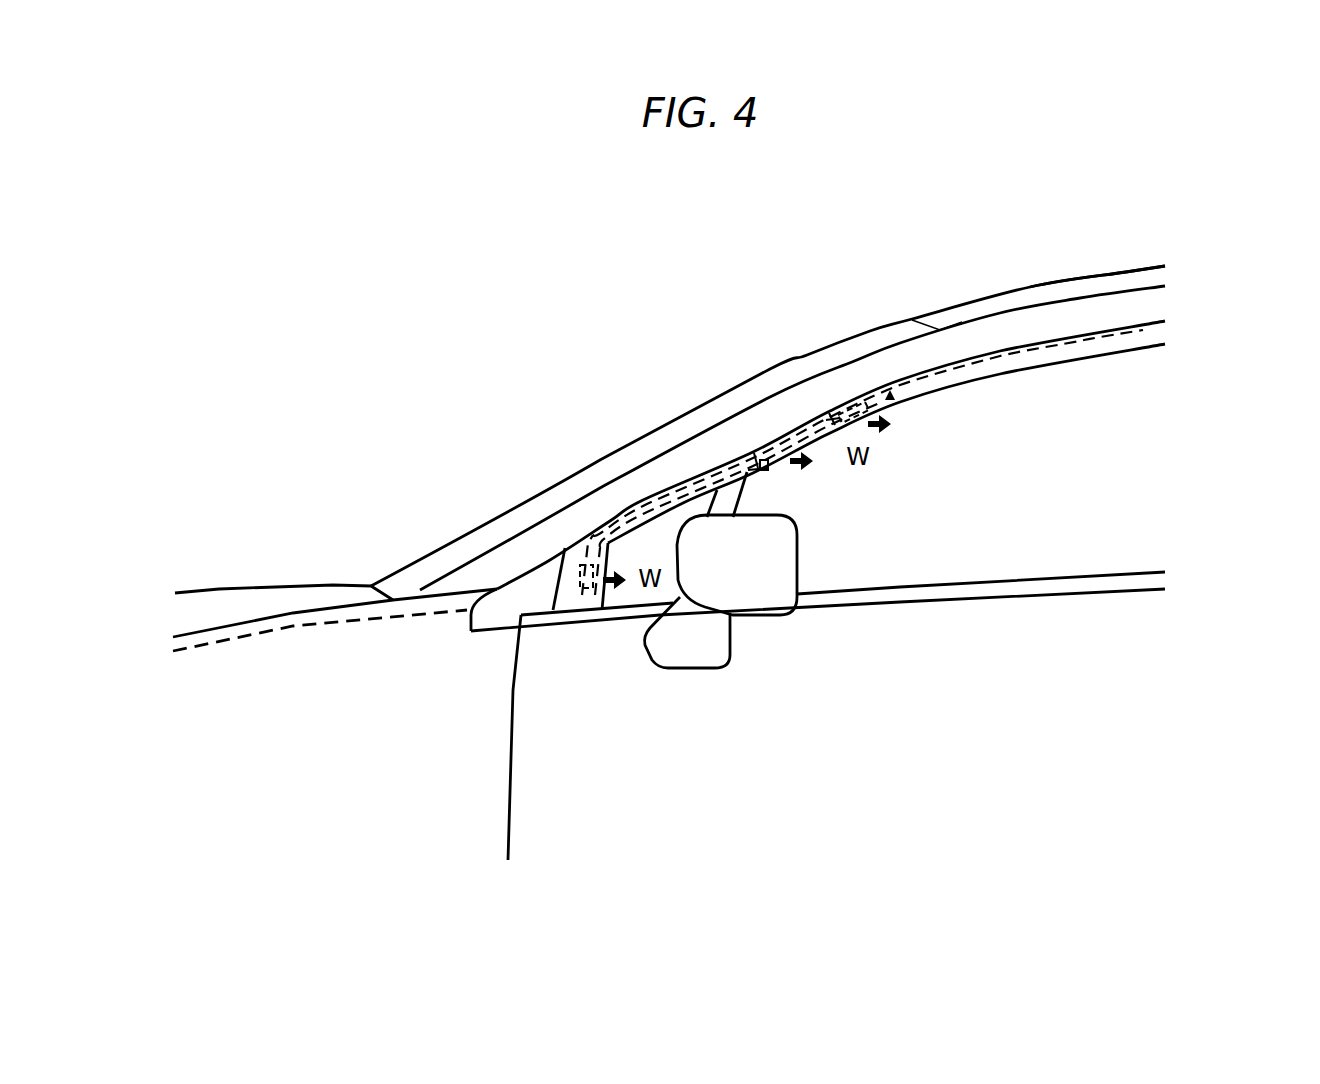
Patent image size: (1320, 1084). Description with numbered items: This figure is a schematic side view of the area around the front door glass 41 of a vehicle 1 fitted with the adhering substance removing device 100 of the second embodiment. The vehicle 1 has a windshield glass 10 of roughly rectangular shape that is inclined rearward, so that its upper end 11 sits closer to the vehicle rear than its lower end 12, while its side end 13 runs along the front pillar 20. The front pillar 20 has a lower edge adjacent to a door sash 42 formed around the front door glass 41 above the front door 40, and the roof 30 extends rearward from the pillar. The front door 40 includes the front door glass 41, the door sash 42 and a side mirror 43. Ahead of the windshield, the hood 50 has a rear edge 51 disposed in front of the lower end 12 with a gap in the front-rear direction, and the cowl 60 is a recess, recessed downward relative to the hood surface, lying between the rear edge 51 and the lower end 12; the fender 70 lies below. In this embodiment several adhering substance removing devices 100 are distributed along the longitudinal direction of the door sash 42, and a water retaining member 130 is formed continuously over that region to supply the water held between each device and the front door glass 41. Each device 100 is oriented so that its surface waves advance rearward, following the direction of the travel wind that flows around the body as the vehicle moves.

The vehicle 1 is at (228, 280).
The windshield glass 10 is at (807, 355).
The upper end 11 is at (912, 320).
The lower end 12 is at (356, 554).
The side end 13 is at (852, 362).
The front pillar 20 is at (882, 372).
The roof 30 is at (1126, 272).
The front door 40 is at (1075, 722).
The front door glass 41 is at (1072, 478).
The door sash 42 is at (1084, 336).
The side mirror 43 is at (752, 610).
The hood 50 is at (219, 589).
The rear edge 51 is at (333, 585).
The cowl 60 is at (371, 586).
The fender 70 is at (290, 722).
The adhering substance removing device 100 is at (828, 412).
The water retaining member 130 is at (722, 482).